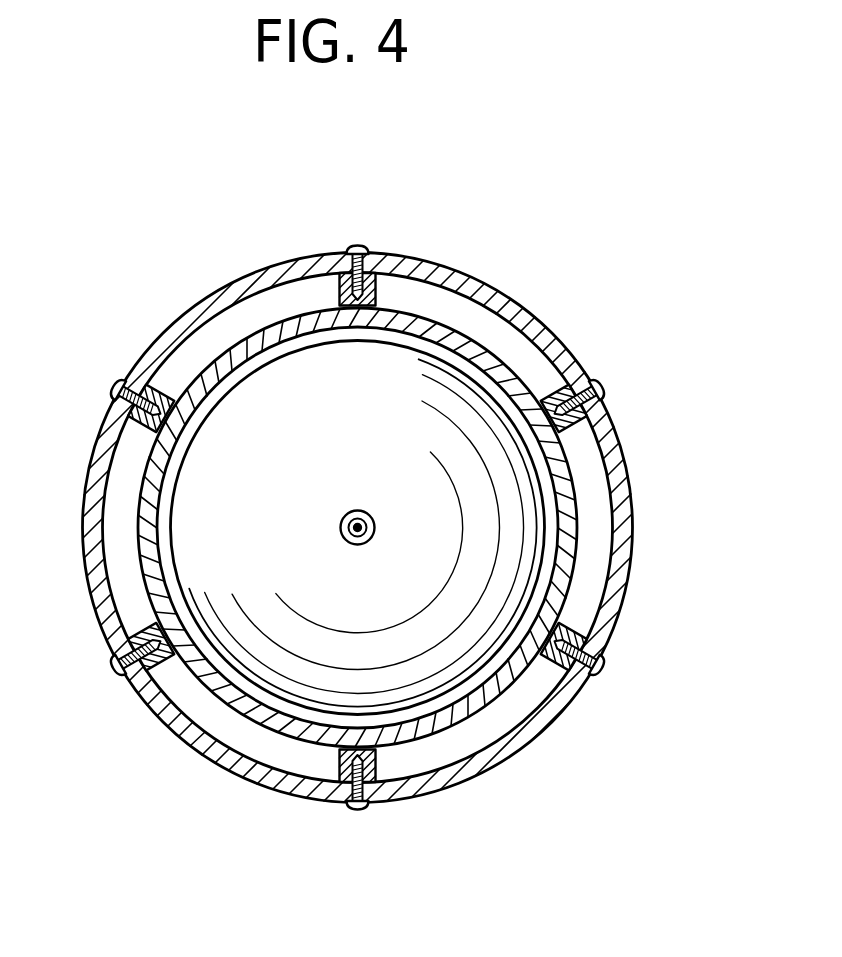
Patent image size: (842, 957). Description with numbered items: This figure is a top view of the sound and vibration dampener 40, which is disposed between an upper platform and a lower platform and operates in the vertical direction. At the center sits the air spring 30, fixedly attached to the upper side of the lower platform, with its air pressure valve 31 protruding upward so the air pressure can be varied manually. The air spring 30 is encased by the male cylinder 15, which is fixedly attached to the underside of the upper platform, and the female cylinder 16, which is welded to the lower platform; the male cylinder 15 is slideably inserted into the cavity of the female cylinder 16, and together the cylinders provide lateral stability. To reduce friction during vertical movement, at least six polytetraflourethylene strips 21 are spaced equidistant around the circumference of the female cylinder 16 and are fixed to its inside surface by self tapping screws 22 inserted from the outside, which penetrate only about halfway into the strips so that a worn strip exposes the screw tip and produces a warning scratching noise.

The sound and vibration dampener 40 is at (522, 256).
The female cylinder 16 is at (628, 547).
The male cylinder 15 is at (147, 480).
The air spring 30 is at (193, 548).
The air pressure valve 31 is at (351, 517).
The polytetraflourethylene strips 21 is at (571, 420).
The self tapping screws 22 is at (605, 390).